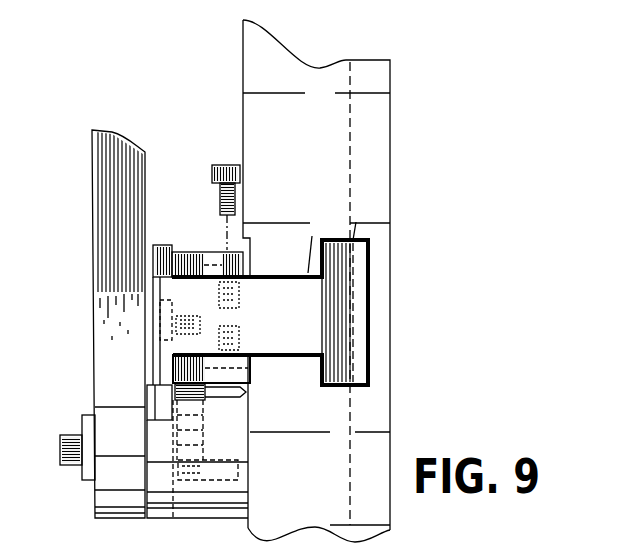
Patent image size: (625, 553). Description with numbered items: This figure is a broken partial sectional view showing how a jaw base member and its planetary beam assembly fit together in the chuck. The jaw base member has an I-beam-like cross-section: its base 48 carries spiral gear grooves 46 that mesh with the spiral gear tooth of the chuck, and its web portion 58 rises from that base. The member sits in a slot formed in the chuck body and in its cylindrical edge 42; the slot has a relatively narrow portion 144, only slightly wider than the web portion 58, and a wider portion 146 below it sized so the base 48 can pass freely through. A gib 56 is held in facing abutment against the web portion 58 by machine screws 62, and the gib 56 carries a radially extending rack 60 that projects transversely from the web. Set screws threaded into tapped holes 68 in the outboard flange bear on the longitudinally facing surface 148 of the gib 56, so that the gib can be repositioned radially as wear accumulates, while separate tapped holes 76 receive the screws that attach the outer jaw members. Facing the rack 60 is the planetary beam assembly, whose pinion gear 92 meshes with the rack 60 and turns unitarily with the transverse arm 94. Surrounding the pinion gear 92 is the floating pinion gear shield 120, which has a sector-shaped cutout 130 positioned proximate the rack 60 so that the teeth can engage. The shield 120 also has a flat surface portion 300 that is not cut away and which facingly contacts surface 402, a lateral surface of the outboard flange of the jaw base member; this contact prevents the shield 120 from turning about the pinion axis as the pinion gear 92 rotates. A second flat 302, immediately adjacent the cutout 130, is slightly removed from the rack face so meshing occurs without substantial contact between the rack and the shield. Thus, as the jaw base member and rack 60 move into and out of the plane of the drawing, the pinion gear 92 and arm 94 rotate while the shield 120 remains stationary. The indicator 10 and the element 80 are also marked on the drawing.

The direction indicator 10 is at (226, 467).
The cylindrical edge 42 is at (355, 146).
The spiral gear grooves 46 is at (372, 350).
The base 48 is at (358, 292).
The gib 56 is at (252, 370).
The web portion 58 is at (281, 287).
The rack 60 is at (255, 388).
The machine screws 62 is at (220, 201).
The tapped holes 68 is at (166, 248).
The tapped holes 76 is at (170, 340).
The column face 80 is at (299, 238).
The pinion gear 92 is at (252, 475).
The arm 94 is at (110, 238).
The floating pinion gear shield 120 is at (248, 525).
The sector-shaped cutout 130 is at (239, 336).
The narrow portion 144 is at (312, 236).
The wider portion 146 is at (356, 222).
The longitudinally facing surface 148 is at (252, 409).
The surface portion 300 is at (156, 390).
The flat 302 is at (222, 410).
The lateral surface 402 is at (168, 392).